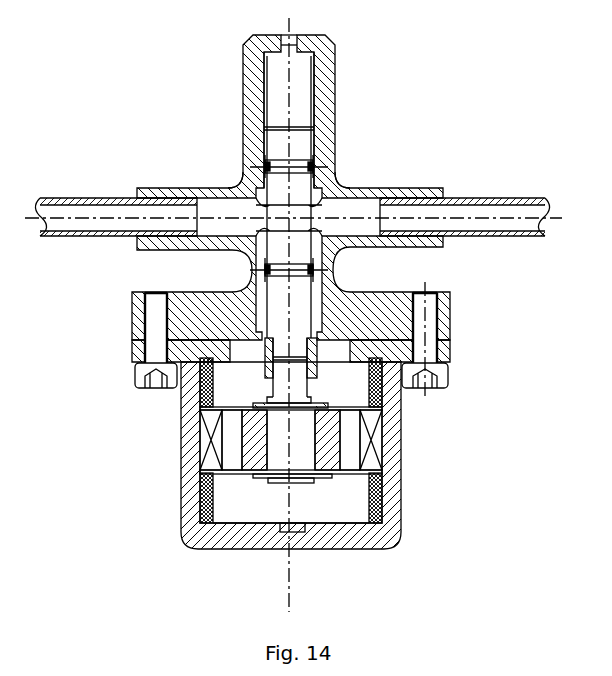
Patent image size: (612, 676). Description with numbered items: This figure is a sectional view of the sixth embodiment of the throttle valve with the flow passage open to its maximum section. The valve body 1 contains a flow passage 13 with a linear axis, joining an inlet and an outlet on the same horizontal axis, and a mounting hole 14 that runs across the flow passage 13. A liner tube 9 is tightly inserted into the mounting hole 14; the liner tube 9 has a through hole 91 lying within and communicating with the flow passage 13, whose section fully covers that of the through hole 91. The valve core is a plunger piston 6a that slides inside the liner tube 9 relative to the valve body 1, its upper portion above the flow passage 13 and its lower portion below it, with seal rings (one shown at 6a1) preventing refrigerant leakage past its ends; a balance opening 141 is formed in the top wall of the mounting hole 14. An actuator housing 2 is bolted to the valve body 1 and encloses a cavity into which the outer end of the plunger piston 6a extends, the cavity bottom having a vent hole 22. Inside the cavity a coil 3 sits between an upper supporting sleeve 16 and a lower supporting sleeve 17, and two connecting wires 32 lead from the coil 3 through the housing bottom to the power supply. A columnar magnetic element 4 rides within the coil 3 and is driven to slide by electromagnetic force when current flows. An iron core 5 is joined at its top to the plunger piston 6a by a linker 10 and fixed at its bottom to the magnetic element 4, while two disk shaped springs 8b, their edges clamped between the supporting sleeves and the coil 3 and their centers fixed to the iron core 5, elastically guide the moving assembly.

The valve body 1 is at (345, 93).
The balance opening 141 is at (337, 45).
The mounting hole 14 is at (282, 79).
The through hole 91 is at (228, 188).
The liner tube 9 is at (335, 127).
The flow passage 13 is at (137, 188).
The seal ring 6a1 is at (337, 177).
The plunger piston 6a is at (297, 247).
The linker 10 is at (333, 353).
The upper supporting sleeve 16 is at (448, 383).
The iron core 5 is at (198, 362).
The disk shaped spring 8b is at (203, 385).
The magnetic element 4 is at (258, 437).
The coil 3 is at (383, 440).
The lower supporting sleeve 17 is at (390, 497).
The actuator housing 2 is at (193, 531).
The vent hole 22 is at (300, 531).
The connecting wires 32 is at (205, 525).